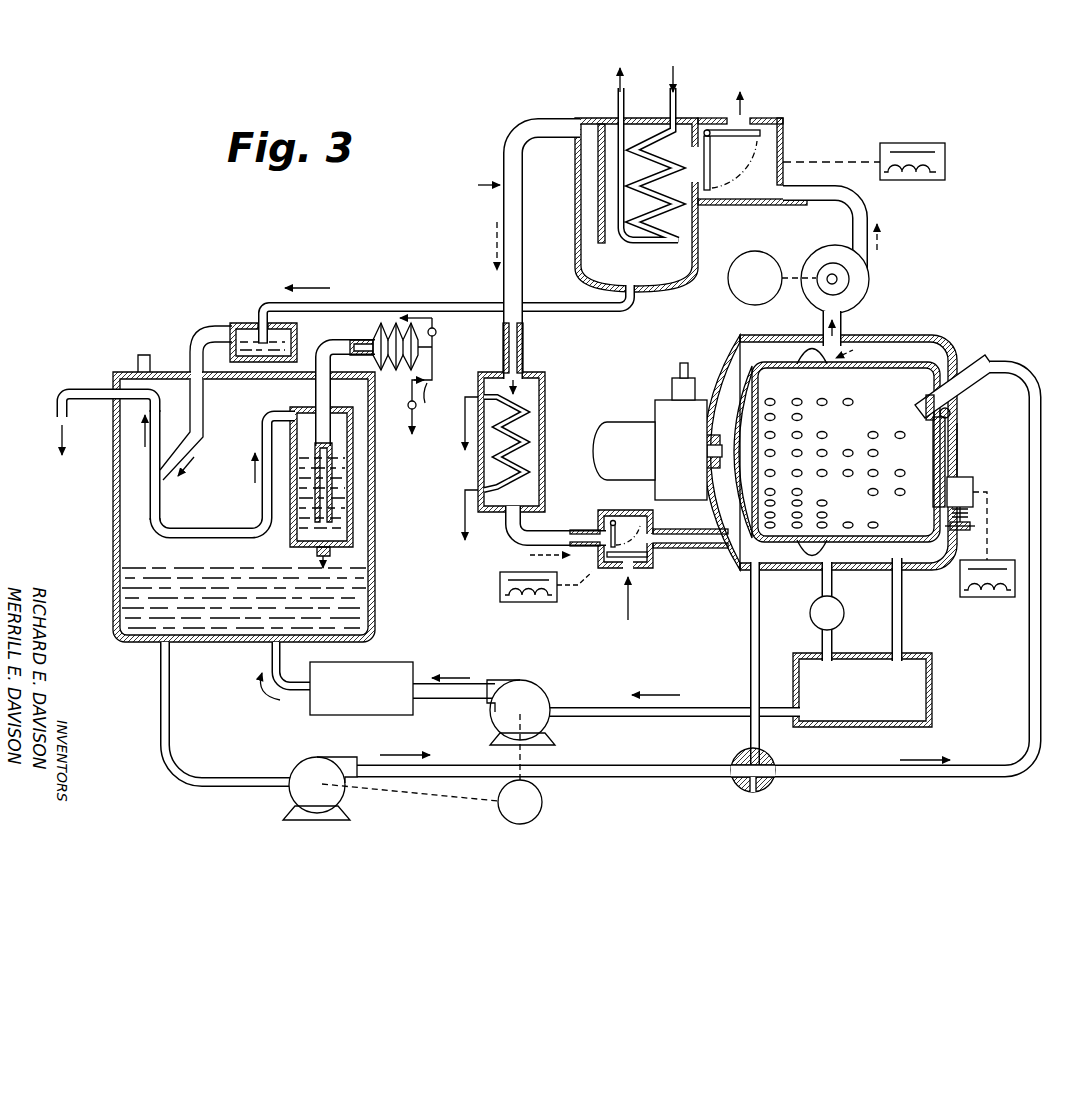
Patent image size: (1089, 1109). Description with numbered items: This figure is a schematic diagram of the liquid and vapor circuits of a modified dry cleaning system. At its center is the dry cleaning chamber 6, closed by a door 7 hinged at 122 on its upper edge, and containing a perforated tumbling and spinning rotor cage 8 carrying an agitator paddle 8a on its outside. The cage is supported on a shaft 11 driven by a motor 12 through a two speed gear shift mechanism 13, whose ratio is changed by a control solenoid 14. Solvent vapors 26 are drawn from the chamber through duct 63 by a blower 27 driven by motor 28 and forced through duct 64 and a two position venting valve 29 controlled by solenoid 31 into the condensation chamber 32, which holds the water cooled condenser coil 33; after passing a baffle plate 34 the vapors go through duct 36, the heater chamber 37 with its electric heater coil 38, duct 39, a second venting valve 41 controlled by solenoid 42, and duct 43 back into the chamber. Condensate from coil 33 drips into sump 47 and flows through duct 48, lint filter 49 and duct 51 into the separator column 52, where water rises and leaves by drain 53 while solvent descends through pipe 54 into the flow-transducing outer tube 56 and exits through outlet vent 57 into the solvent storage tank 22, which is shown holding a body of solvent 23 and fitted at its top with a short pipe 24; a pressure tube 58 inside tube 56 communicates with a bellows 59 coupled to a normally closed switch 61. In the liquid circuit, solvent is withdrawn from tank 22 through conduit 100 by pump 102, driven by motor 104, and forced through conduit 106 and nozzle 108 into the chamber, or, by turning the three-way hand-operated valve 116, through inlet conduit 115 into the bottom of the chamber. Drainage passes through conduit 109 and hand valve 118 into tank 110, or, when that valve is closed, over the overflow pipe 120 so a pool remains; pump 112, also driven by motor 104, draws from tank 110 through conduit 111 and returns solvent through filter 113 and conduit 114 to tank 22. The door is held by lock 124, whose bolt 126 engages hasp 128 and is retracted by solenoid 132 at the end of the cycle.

The dry cleaning chamber 6 is at (927, 337).
The door 7 is at (947, 446).
The perforated tumbling and spinning rotor cage 8 is at (883, 366).
The agitator paddle 8a is at (818, 347).
The shaft 11 is at (708, 452).
The motor 12 is at (598, 460).
The two speed gear shift mechanism 13 is at (663, 407).
The control solenoid 14 is at (668, 378).
The solvent storage tank 22 is at (117, 525).
The solvent liquid 23 is at (130, 597).
The vent pipe 24 is at (137, 352).
The solvent vapors 26 is at (518, 388).
The blower 27 is at (858, 280).
The motor 28 is at (757, 250).
The two position venting valve 29 is at (785, 123).
The solenoid 31 is at (912, 143).
The condensation chamber 32 is at (588, 168).
The water cooled condenser coil 33 is at (657, 133).
The baffle plate 34 is at (600, 204).
The duct 36 is at (508, 144).
The heater chamber 37 is at (546, 410).
The electric heater coil 38 is at (520, 438).
The duct 39 is at (562, 530).
The two position venting valve 41 is at (653, 558).
The solenoid 42 is at (500, 588).
The duct 43 is at (683, 548).
The sump 47 is at (653, 277).
The duct 48 is at (477, 303).
The lint filter 49 is at (250, 323).
The duct 51 is at (192, 393).
The separator column 52 is at (150, 450).
The drain 53 is at (98, 389).
The pipe 54 is at (207, 533).
The flow-transducing outer tube 56 is at (353, 453).
The outlet vent 57 is at (330, 560).
The pressure tube 58 is at (337, 398).
The pneumatic pressure responsive bellows 59 is at (380, 333).
The normally closed switch 61 is at (423, 376).
The duct 63 is at (847, 318).
The duct 64 is at (860, 213).
The conduit 100 is at (163, 709).
The pump 102 is at (308, 766).
The motor 104 is at (543, 805).
The conduit 106 is at (1033, 579).
The nozzle 108 is at (920, 407).
The conduit 109 is at (822, 637).
The tank 110 is at (933, 690).
The conduit 111 is at (673, 714).
The pump 112 is at (517, 681).
The filter 113 is at (383, 662).
The conduit 114 is at (273, 656).
The inlet conduit 115 is at (752, 629).
The 3-way hand-operated valve 116 is at (768, 790).
The hand valve 118 is at (812, 602).
The overflow pipe 120 is at (898, 611).
The hinge 122 is at (952, 413).
The lock 124 is at (967, 480).
The bolt 126 is at (968, 512).
The hasp 128 is at (970, 527).
The solenoid 132 is at (990, 598).